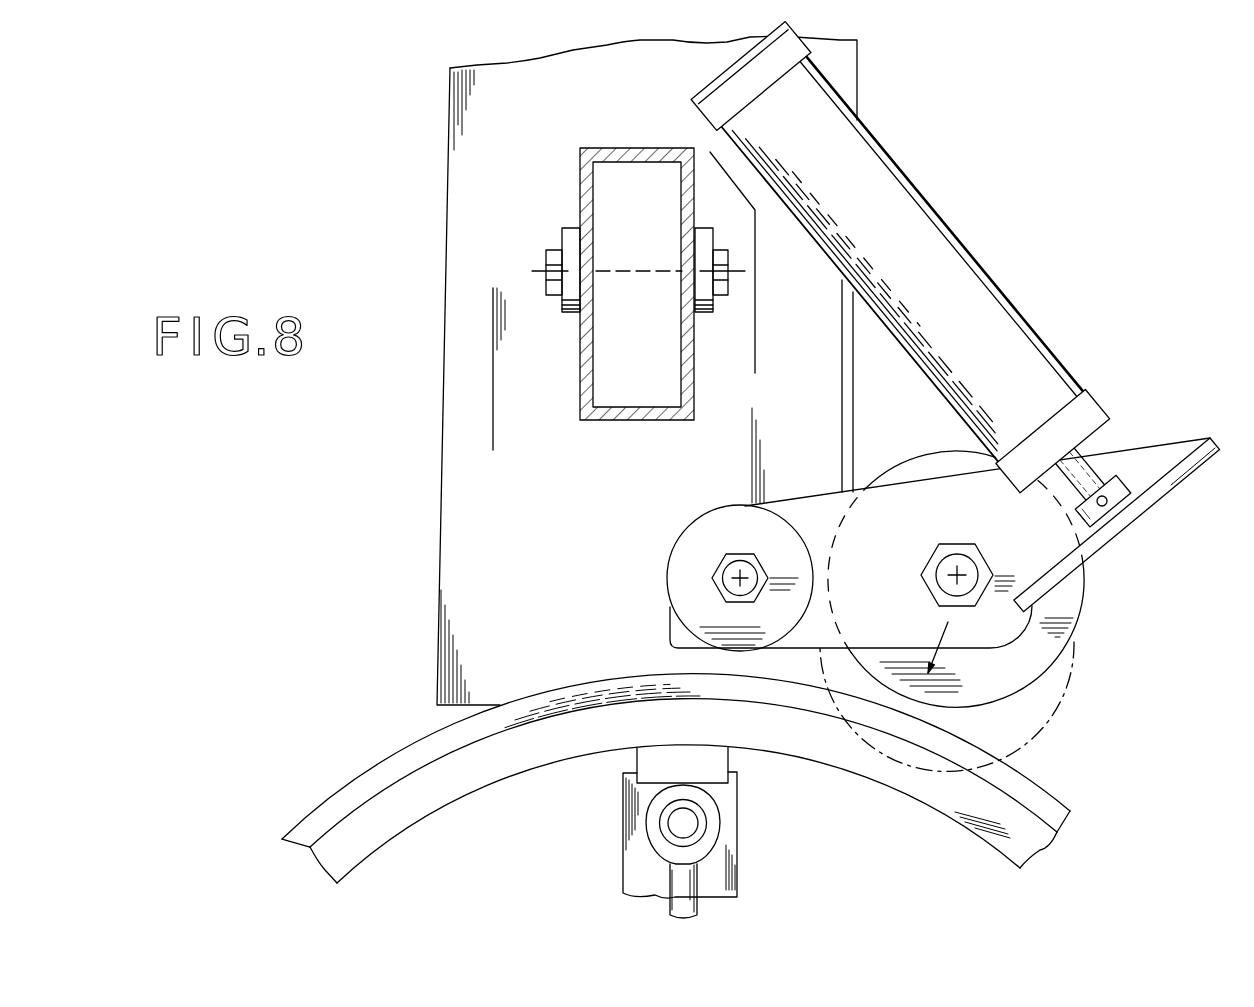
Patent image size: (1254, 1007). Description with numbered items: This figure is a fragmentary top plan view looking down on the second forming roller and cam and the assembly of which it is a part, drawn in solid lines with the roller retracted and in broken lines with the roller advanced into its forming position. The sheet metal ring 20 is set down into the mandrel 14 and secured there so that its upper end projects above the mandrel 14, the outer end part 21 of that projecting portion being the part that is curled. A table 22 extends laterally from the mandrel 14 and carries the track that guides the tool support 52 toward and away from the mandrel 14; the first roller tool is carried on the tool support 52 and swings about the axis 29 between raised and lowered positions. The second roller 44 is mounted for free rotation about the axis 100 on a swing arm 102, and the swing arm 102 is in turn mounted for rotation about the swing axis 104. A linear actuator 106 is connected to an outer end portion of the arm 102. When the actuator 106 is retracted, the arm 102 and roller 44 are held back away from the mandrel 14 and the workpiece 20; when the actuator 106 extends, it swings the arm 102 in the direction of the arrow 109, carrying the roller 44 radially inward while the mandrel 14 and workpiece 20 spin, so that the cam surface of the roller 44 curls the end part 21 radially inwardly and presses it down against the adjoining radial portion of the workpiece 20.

The mandrel 14 is at (543, 768).
The sheet metal ring 20 is at (1025, 827).
The outer end part 21 is at (1008, 777).
The table 22 is at (542, 83).
The axis 29 is at (540, 271).
The second roller 44 is at (1070, 597).
The tool support 52 is at (598, 377).
The axis 100 is at (955, 570).
The swing arm 102 is at (816, 508).
The swing axis 104 is at (735, 582).
The linear actuator 106 is at (940, 255).
The direction of movement arrow 109 is at (940, 635).